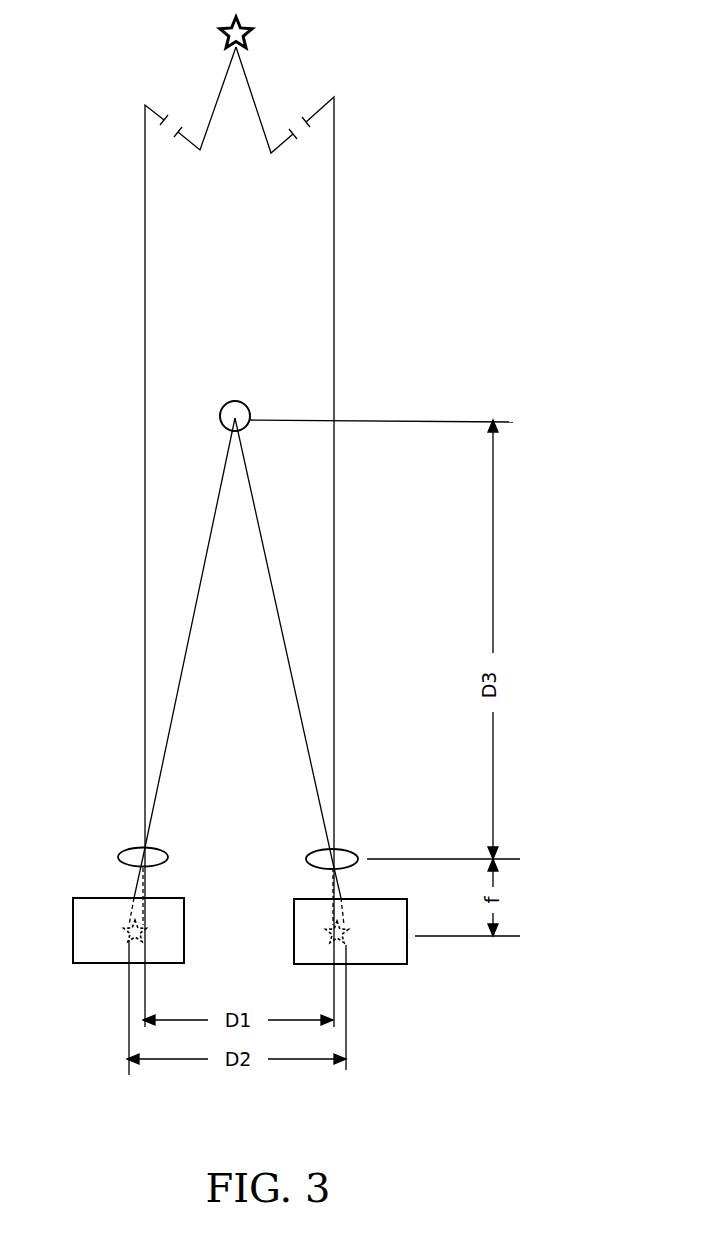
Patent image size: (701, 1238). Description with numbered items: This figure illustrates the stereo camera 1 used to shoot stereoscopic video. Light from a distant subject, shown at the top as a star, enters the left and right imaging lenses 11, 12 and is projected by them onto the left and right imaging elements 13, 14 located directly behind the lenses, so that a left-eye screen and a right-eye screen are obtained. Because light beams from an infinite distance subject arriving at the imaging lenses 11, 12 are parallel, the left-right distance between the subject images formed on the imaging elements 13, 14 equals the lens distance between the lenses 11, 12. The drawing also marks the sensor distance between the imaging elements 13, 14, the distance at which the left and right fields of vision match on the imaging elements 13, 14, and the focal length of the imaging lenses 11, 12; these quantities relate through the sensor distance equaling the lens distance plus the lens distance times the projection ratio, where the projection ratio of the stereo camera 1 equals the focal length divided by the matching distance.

The stereo camera 1 is at (470, 979).
The imaging lens 11 is at (342, 850).
The imaging lens 12 is at (128, 847).
The imaging element 13 is at (350, 945).
The imaging element 14 is at (125, 940).